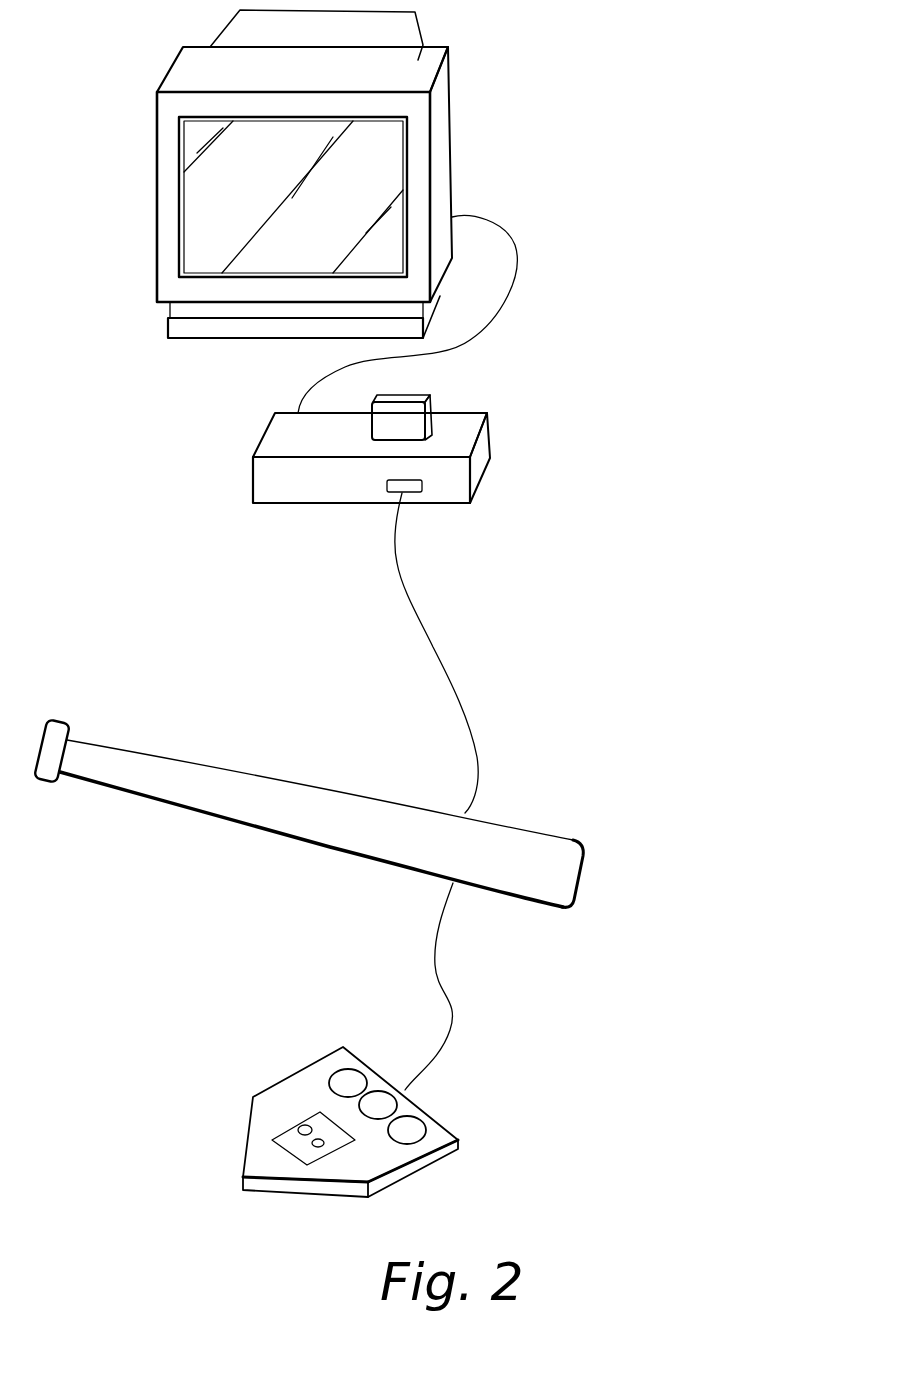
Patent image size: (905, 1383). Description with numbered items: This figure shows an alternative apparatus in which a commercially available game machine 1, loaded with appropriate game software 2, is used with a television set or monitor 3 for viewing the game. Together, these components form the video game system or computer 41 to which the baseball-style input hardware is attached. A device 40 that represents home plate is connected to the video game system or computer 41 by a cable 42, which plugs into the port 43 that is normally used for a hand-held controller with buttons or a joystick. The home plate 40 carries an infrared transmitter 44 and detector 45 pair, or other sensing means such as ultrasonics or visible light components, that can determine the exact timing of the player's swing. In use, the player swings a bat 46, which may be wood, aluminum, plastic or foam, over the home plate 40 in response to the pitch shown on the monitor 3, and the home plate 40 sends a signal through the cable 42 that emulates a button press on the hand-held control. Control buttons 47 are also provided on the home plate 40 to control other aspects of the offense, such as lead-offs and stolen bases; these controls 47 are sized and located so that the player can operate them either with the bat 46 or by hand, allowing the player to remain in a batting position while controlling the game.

The game machine 1 is at (511, 435).
The game software 2 is at (415, 417).
The television set or monitor 3 is at (423, 46).
The home plate 40 is at (250, 1079).
The video game system or computer 41 is at (562, 226).
The cable 42 is at (463, 707).
The port 43 is at (390, 493).
The infrared transmitter 44 is at (297, 1125).
The detector 45 is at (327, 1148).
The bat 46 is at (273, 832).
The control buttons 47 is at (348, 1067).